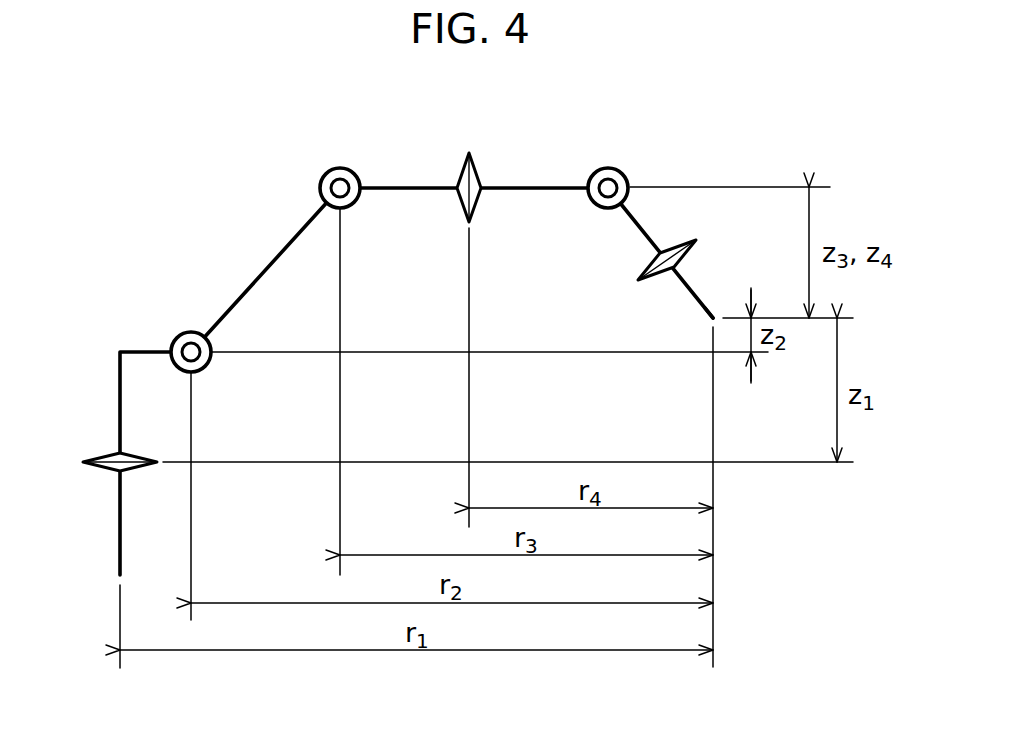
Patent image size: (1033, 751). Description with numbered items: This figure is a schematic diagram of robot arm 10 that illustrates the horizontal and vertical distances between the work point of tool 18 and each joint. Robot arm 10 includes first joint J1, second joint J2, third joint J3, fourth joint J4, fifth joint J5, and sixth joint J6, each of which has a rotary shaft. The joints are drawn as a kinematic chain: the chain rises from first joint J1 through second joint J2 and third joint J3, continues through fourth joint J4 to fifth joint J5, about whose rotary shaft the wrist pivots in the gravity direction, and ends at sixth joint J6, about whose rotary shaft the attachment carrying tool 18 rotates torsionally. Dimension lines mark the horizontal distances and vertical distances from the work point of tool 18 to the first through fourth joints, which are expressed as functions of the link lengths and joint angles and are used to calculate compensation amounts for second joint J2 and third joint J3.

The robot arm 10 is at (204, 182).
The first joint J1 is at (100, 454).
The second joint J2 is at (183, 333).
The third joint J3 is at (325, 172).
The fourth joint J4 is at (475, 213).
The fifth joint J5 is at (603, 169).
The sixth joint J6 is at (669, 248).
The tool 18 is at (676, 278).